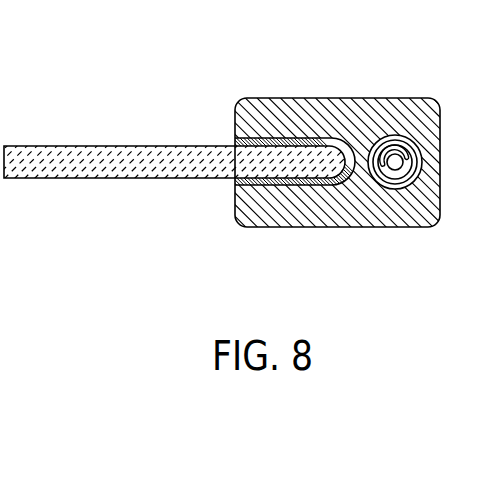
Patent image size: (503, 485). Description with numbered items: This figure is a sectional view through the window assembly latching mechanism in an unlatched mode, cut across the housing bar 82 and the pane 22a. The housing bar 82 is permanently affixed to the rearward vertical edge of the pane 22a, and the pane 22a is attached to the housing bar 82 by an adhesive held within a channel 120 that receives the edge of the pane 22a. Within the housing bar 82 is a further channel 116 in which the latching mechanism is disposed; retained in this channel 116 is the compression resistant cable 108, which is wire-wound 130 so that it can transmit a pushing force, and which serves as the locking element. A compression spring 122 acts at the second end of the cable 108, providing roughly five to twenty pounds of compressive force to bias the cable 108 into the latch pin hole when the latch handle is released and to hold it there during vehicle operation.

The pane 22a is at (158, 146).
The housing bar 82 is at (440, 128).
The compression resistant cable 108 is at (378, 148).
The wire-wound 130 is at (408, 148).
The channel 120 is at (277, 187).
The channel 116 is at (395, 163).
The compression spring 122 is at (395, 170).